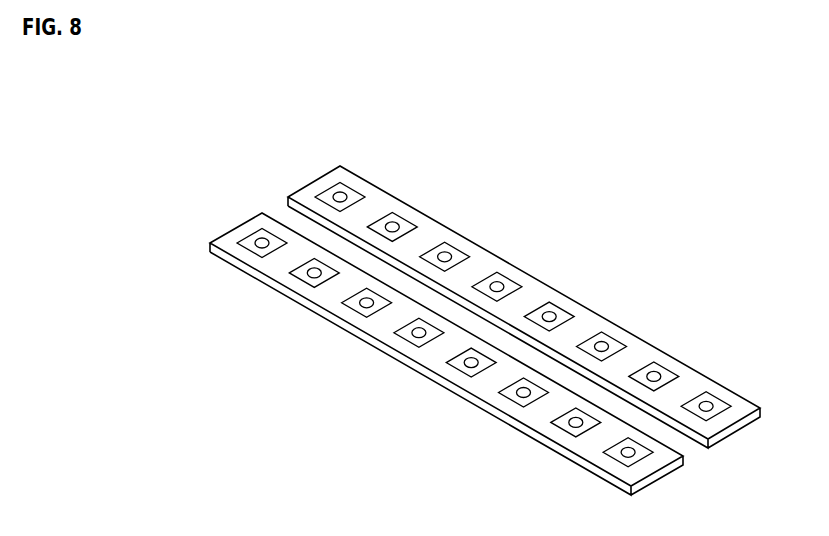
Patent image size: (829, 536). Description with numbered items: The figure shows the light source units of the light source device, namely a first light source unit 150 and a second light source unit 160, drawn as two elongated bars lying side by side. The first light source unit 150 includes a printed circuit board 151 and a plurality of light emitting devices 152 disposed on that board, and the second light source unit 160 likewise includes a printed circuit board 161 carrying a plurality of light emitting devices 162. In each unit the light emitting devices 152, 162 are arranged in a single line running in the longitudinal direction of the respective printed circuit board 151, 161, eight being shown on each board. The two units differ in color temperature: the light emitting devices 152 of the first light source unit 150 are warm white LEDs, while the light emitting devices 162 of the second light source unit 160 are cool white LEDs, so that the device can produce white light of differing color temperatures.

The first light source unit 150 is at (478, 303).
The printed circuit board 151 is at (303, 209).
The light emitting devices 152 is at (318, 192).
The second light source unit 160 is at (400, 349).
The printed circuit board 161 is at (219, 254).
The light emitting devices 162 is at (243, 242).